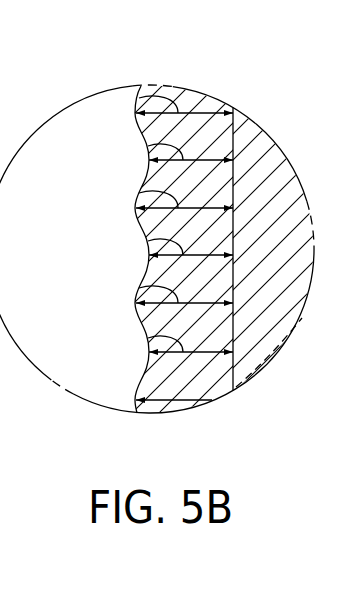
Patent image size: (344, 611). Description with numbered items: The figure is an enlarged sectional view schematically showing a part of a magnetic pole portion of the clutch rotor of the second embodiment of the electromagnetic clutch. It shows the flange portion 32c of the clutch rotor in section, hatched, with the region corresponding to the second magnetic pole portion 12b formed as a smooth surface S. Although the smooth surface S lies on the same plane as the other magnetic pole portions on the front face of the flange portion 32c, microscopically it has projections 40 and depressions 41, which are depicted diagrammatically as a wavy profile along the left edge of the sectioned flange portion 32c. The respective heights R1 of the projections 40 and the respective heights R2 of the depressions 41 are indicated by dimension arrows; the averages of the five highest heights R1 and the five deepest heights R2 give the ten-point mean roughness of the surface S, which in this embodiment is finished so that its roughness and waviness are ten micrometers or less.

The second magnetic pole portion 12b is at (143, 369).
The flange portion 32c is at (268, 341).
The projections 40 is at (138, 216).
The depressions 41 is at (146, 262).
The heights of projections R1 is at (139, 287).
The heights of depressions R2 is at (148, 333).
The smooth surface S is at (128, 396).